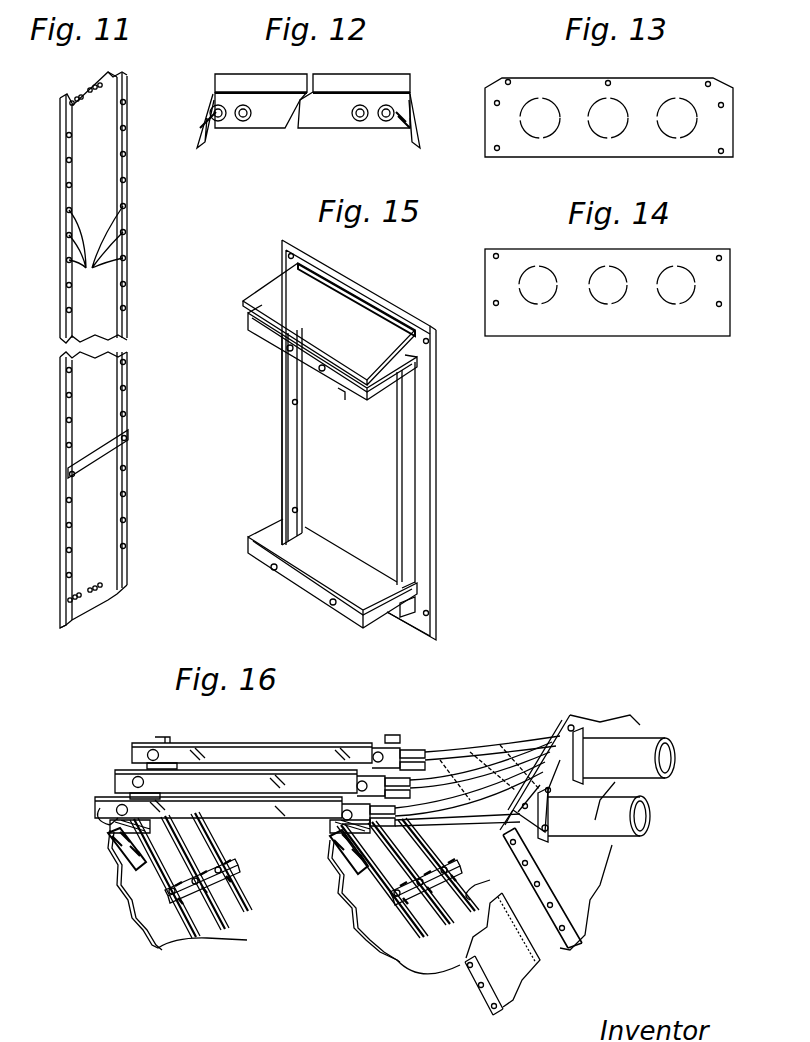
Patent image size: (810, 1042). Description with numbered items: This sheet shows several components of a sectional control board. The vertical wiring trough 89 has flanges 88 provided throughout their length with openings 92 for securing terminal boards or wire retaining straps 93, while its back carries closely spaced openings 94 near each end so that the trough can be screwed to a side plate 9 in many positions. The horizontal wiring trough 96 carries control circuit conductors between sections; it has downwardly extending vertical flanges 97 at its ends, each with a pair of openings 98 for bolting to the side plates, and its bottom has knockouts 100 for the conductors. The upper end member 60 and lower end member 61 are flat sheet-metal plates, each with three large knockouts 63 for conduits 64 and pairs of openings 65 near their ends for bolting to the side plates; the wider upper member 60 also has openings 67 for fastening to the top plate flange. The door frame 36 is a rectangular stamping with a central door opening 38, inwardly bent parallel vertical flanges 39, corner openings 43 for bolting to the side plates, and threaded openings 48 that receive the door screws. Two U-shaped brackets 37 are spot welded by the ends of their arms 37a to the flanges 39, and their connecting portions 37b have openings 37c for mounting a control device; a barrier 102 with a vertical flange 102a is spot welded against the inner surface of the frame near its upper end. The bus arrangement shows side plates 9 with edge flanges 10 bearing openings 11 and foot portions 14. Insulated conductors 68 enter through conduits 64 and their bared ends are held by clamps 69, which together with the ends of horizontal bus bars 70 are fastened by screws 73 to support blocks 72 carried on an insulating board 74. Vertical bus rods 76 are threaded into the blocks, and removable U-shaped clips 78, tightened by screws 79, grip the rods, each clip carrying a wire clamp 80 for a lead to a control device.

In FIG. 16, the side plate 9 is at (150, 935).
In FIG. 16, the flange 10 is at (572, 948).
In FIG. 16, the opening 11 is at (562, 930).
In FIG. 16, the foot portion 14 is at (520, 835).
In FIG. 15, the door frame 36 is at (437, 503).
In FIG. 15, the U-shaped bracket 37 is at (247, 320).
In FIG. 15, the arm 37a is at (410, 372).
In FIG. 15, the connecting portion 37b is at (345, 385).
In FIG. 15, the opening 37c is at (320, 370).
In FIG. 15, the door opening 38 is at (320, 436).
In FIG. 15, the vertical flange 39 is at (398, 506).
In FIG. 15, the opening 43 is at (288, 256).
In FIG. 15, the threaded opening 48 is at (292, 402).
In FIG. 13, the upper end member 60 is at (548, 80).
In FIG. 14, the lower end member 61 is at (545, 255).
In FIG. 13, the knockout 63 is at (556, 132).
In FIG. 14, the knockout 63 is at (552, 300).
In FIG. 16, the conduit 64 is at (615, 800).
In FIG. 13, the opening 65 is at (495, 146).
In FIG. 14, the opening 65 is at (494, 300).
In FIG. 13, the opening 67 is at (706, 84).
In FIG. 16, the insulated conductor 68 is at (505, 752).
In FIG. 16, the clamp 69 is at (398, 748).
In FIG. 16, the horizontal bus bar 70 is at (262, 790).
In FIG. 16, the support block 72 is at (130, 748).
In FIG. 16, the screw 73 is at (118, 783).
In FIG. 16, the insulating board 74 is at (107, 833).
In FIG. 16, the vertical bus rod 76 is at (248, 912).
In FIG. 16, the U-shaped clip 78 is at (170, 888).
In FIG. 16, the screw 79 is at (176, 900).
In FIG. 16, the wire clamp 80 is at (222, 870).
In FIG. 11, the flange 88 is at (68, 205).
In FIG. 16, the flange 88 is at (488, 1018).
In FIG. 11, the wiring trough 89 is at (58, 112).
In FIG. 16, the wiring trough 89 is at (520, 985).
In FIG. 11, the opening 92 is at (96, 250).
In FIG. 16, the opening 92 is at (491, 1007).
In FIG. 11, the wire retaining strap 93 is at (95, 462).
In FIG. 11, the opening 94 is at (95, 87).
In FIG. 12, the horizontal wiring trough 96 is at (248, 75).
In FIG. 12, the vertical flange 97 is at (199, 135).
In FIG. 12, the opening 98 is at (205, 128).
In FIG. 12, the knockout 100 is at (382, 122).
In FIG. 15, the barrier 102 is at (329, 324).
In FIG. 15, the vertical flange 102a is at (358, 300).